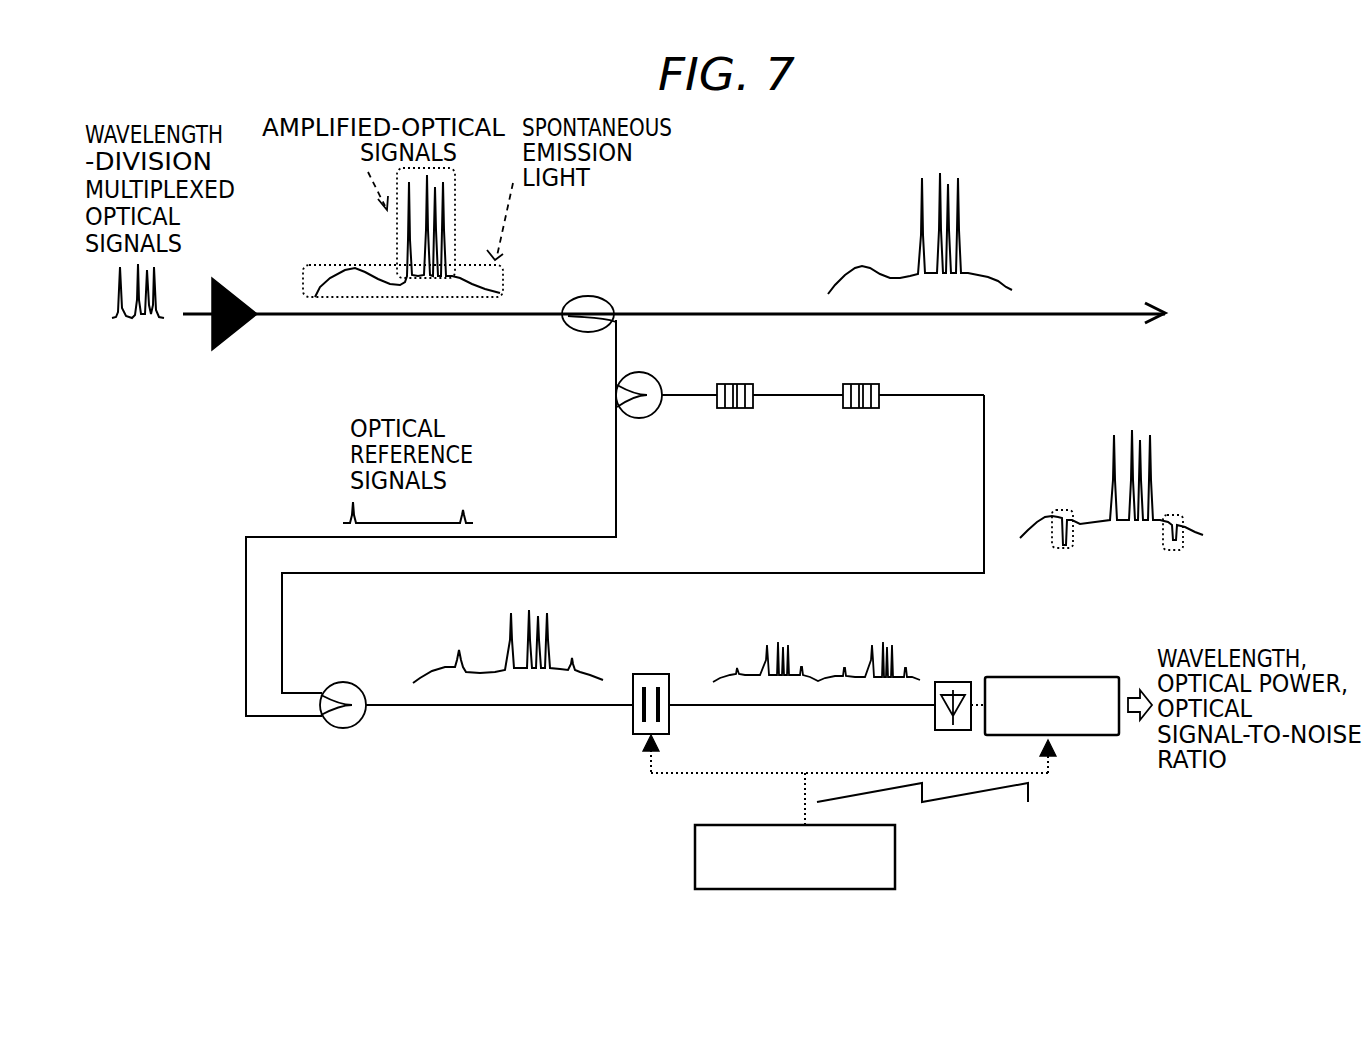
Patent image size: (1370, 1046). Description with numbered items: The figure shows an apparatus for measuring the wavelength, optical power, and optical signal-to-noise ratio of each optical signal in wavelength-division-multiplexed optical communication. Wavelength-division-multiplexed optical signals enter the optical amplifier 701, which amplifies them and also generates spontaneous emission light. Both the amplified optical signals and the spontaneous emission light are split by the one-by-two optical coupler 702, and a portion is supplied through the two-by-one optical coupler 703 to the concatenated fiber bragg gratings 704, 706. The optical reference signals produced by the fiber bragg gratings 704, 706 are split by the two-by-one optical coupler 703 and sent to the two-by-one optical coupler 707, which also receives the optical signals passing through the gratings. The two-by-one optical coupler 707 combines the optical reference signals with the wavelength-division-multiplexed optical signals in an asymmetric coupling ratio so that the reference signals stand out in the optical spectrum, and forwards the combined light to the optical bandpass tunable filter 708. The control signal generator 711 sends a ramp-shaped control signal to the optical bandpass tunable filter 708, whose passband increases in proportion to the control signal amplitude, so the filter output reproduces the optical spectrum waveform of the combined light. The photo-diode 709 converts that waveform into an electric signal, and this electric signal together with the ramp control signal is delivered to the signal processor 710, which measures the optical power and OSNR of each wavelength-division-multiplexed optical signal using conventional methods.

The optical amplifier 701 is at (233, 335).
The 1×2 optical coupler 702 is at (588, 297).
The 2×1 optical coupler 703 is at (617, 392).
The fiber bragg grating 704 is at (737, 410).
The fiber bragg grating 706 is at (860, 410).
The 2×1 optical coupler 707 is at (338, 683).
The optical bandpass tunable filter 708 is at (653, 674).
The photo-diode 709 is at (952, 682).
The signal processor 710 is at (1047, 677).
The control signal generator 711 is at (895, 857).